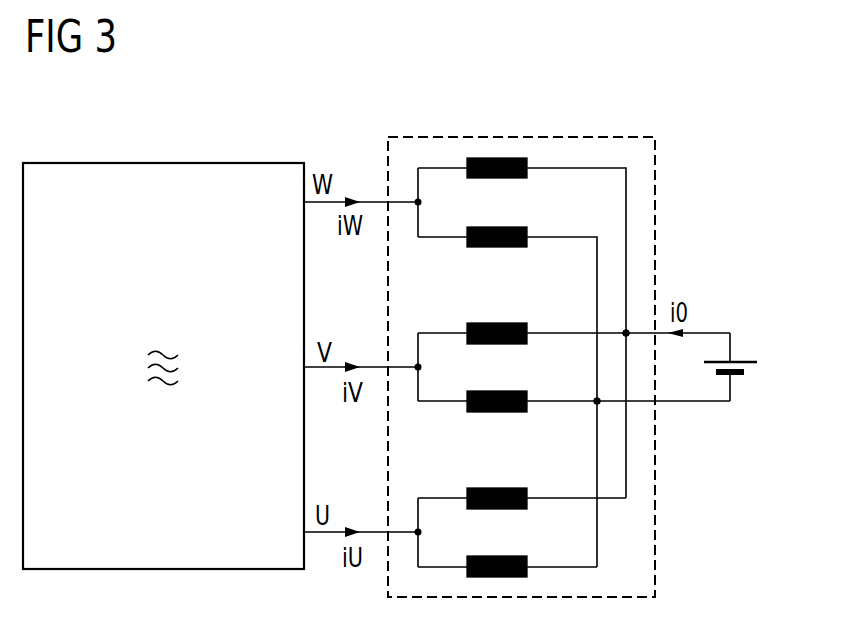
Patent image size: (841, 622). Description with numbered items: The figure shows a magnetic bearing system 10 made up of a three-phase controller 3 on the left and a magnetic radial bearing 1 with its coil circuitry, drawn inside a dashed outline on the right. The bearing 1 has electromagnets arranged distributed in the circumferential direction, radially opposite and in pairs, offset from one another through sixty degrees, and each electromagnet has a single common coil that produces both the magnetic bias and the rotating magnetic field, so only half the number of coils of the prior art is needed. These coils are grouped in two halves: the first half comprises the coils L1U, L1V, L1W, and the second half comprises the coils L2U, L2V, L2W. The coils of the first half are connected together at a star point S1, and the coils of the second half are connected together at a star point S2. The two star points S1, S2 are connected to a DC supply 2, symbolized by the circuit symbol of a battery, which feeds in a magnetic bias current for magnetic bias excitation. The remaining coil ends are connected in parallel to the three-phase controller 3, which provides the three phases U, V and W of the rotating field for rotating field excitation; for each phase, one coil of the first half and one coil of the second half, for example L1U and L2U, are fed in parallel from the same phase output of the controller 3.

The three-phase controller 3 is at (191, 163).
The magnetic radial bearing 1 is at (655, 206).
The magnetic bearing system 10 is at (710, 166).
The DC supply 2 is at (747, 366).
The star point S1 is at (597, 401).
The star point S2 is at (626, 333).
The coil L1W is at (498, 229).
The coil L2W is at (498, 160).
The coil L1V is at (500, 392).
The coil L2V is at (500, 324).
The coil L1U is at (500, 557).
The coil L2U is at (500, 489).